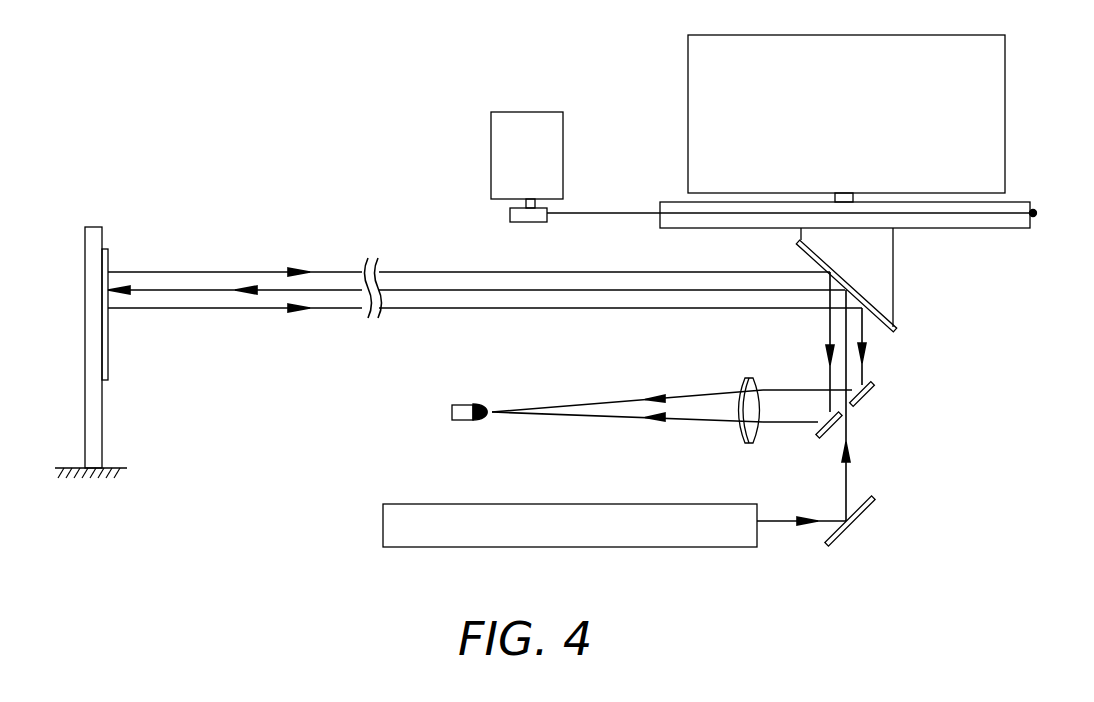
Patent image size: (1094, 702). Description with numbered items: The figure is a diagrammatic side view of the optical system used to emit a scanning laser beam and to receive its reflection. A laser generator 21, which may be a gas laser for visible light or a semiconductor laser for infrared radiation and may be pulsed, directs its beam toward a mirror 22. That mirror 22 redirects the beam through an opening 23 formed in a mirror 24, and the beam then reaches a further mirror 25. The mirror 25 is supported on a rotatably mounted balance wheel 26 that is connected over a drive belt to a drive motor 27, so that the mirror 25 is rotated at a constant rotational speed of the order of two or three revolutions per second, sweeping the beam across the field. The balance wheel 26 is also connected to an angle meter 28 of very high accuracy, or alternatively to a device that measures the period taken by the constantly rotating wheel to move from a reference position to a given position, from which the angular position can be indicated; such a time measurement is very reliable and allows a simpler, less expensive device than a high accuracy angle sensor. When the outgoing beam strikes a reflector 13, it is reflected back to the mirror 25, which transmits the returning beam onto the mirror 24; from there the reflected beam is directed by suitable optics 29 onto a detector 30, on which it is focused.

The reflector 13 is at (108, 263).
The laser generator 21 is at (687, 537).
The mirror 22 is at (843, 537).
The opening 23 is at (850, 410).
The mirror 24 is at (866, 396).
The mirror 25 is at (891, 333).
The balance wheel 26 is at (1000, 228).
The drive motor 27 is at (500, 146).
The angle meter 28 is at (997, 110).
The optics 29 is at (750, 380).
The detector 30 is at (462, 405).